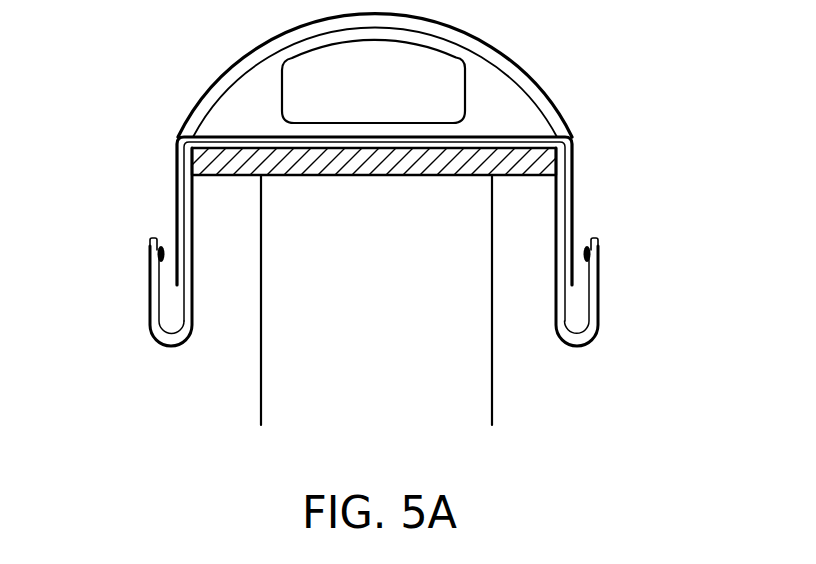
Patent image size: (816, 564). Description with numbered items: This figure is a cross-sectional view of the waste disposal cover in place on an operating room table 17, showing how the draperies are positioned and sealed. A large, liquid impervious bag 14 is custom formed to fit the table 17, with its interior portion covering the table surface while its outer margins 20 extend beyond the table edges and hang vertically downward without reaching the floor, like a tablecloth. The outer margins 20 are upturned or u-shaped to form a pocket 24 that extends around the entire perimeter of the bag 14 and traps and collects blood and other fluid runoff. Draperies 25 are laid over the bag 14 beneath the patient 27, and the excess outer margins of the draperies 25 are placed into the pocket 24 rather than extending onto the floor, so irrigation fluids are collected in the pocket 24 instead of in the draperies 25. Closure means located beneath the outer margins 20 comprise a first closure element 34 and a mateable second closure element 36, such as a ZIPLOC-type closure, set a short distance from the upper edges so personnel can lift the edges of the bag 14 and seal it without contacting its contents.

The liquid impervious bag 14 is at (188, 187).
The operating room table 17 is at (500, 158).
The outer margins 20 is at (154, 303).
The pocket 24 is at (576, 310).
The draperies 25 is at (173, 163).
The patient 27 is at (437, 72).
The first closure element 34 is at (148, 245).
The second closure element 36 is at (598, 248).